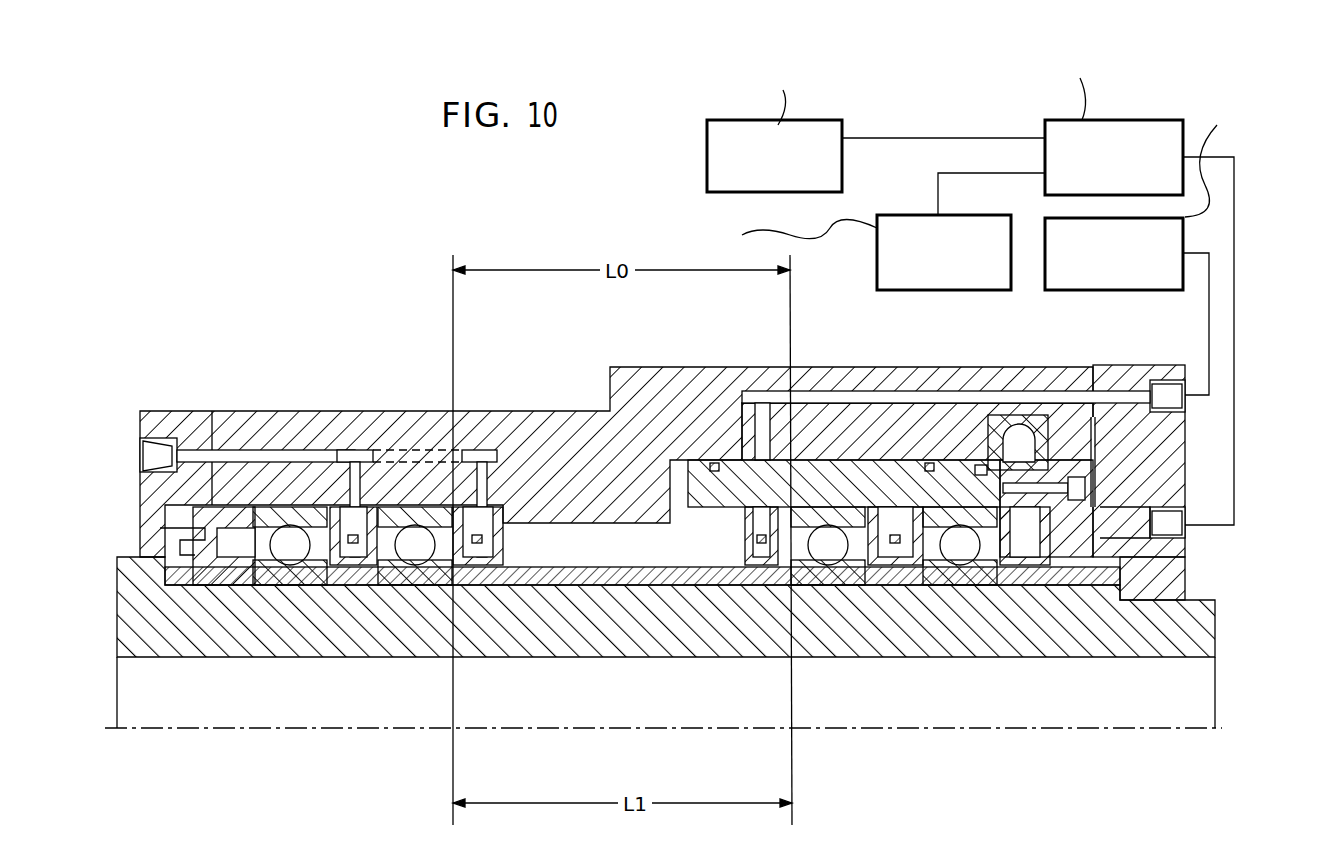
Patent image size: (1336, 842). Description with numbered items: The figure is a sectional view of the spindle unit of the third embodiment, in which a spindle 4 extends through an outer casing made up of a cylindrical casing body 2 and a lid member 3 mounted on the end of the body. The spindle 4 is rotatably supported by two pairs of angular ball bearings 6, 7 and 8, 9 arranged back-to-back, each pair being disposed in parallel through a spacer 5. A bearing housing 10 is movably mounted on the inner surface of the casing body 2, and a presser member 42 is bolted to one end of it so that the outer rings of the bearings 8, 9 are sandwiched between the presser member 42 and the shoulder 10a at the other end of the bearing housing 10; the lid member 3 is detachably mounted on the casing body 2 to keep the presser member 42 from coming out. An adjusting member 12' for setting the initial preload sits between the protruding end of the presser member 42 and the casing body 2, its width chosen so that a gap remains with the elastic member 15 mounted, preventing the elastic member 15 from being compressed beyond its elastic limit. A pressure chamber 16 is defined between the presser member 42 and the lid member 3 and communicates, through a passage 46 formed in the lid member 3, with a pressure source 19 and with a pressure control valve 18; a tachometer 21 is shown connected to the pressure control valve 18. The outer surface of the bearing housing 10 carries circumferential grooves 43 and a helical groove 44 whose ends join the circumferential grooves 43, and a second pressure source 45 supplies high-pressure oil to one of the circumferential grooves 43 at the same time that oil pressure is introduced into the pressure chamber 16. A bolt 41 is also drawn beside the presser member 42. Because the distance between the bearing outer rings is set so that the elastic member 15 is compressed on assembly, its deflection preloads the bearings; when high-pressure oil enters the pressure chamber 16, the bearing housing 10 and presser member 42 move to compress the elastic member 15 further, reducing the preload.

The casing body 2 is at (655, 385).
The lid member 3 is at (1158, 460).
The spindle 4 is at (578, 657).
The spacer 5 is at (355, 586).
The angular ball bearing 6 is at (282, 586).
The angular ball bearing 7 is at (410, 586).
The angular ball bearing 8 is at (848, 586).
The angular ball bearing 9 is at (962, 586).
The bearing housing 10 is at (870, 472).
The shoulder 10a is at (745, 586).
The adjusting member 12' is at (968, 399).
The elastic member 15 is at (1015, 420).
The pressure chamber 16 is at (1130, 510).
The pressure control valve 18 is at (1045, 125).
The pressure source 19 is at (877, 262).
The tachometer 21 is at (706, 152).
The bolt 41 is at (1052, 413).
The presser member 42 is at (1080, 440).
The circumferential grooves 43 is at (748, 460).
The helical groove 44 is at (843, 465).
The pressure source 45 is at (1118, 290).
The passage 46 is at (1140, 523).